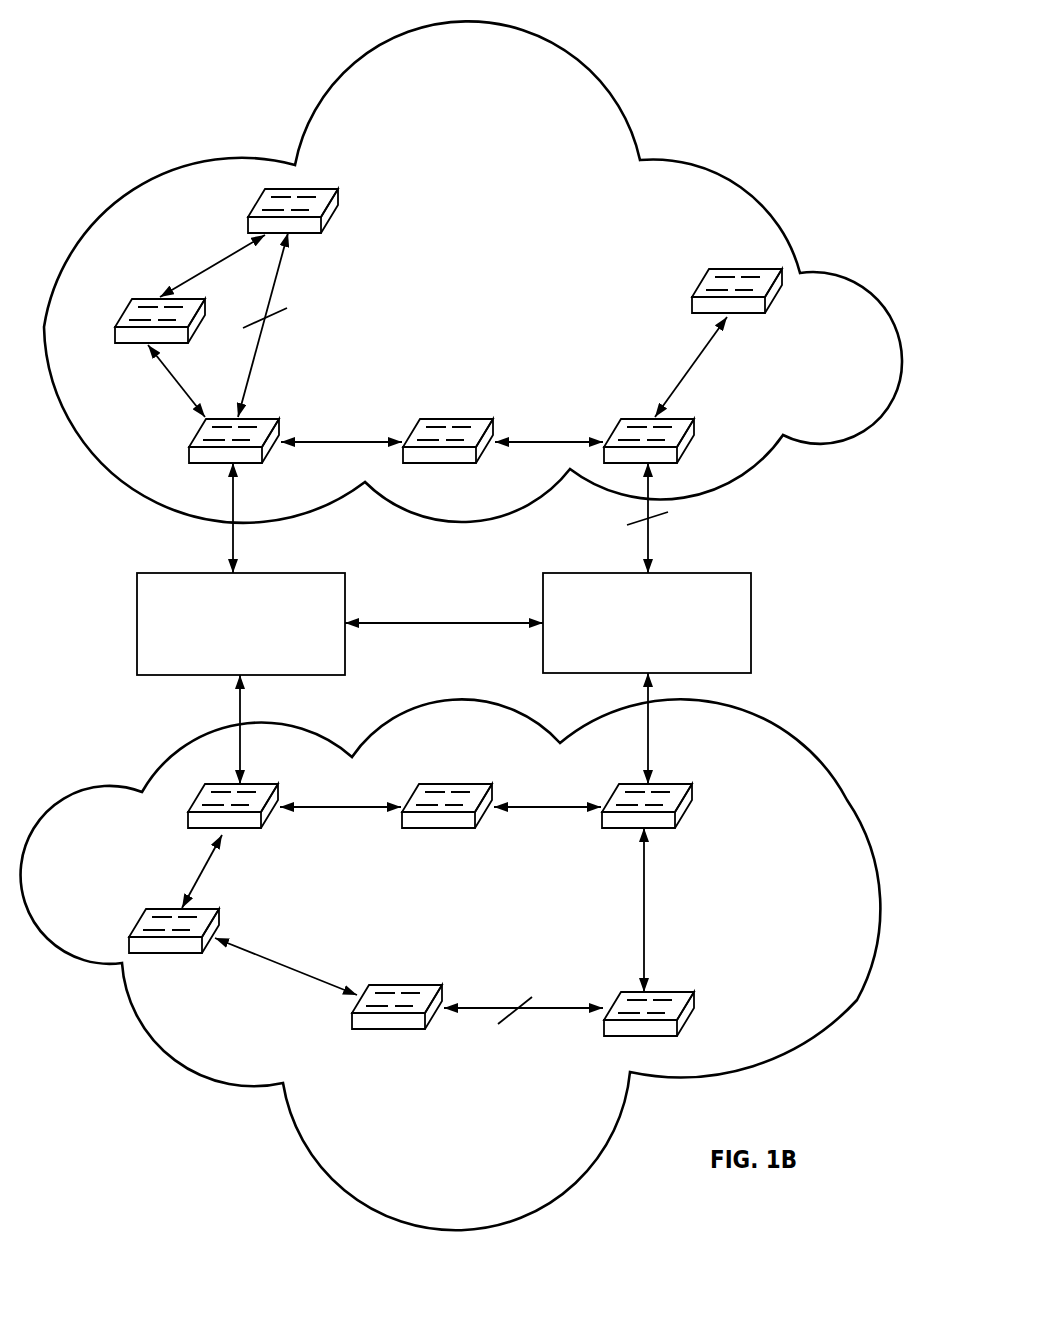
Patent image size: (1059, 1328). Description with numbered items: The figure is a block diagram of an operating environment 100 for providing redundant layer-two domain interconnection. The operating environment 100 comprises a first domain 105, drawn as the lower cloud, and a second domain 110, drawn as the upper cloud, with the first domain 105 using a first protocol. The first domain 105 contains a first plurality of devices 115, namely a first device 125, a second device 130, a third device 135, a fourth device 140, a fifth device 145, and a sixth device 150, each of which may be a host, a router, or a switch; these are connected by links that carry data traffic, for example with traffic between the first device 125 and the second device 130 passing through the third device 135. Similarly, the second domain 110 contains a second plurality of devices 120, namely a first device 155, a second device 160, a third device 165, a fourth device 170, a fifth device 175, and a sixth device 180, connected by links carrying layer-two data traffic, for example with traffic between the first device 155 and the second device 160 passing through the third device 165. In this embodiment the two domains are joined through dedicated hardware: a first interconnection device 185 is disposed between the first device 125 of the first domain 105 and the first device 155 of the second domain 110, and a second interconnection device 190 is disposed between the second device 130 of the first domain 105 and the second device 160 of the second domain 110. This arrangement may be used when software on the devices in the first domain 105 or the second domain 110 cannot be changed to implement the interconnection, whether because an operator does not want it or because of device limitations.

The operating environment 100 is at (181, 59).
The first domain 105 is at (188, 1072).
The second domain 110 is at (623, 110).
The first plurality of devices 115 is at (693, 917).
The second plurality of devices 120 is at (490, 318).
The first device 125 is at (188, 815).
The second device 130 is at (690, 808).
The third device 135 is at (447, 828).
The fourth device 140 is at (220, 925).
The fifth device 145 is at (403, 987).
The sixth device 150 is at (620, 988).
The first device 155 is at (265, 418).
The second device 160 is at (617, 417).
The third device 165 is at (455, 416).
The fourth device 170 is at (143, 297).
The fifth device 175 is at (340, 202).
The sixth device 180 is at (698, 283).
The first interconnection device 185 is at (137, 622).
The second interconnection device 190 is at (753, 627).